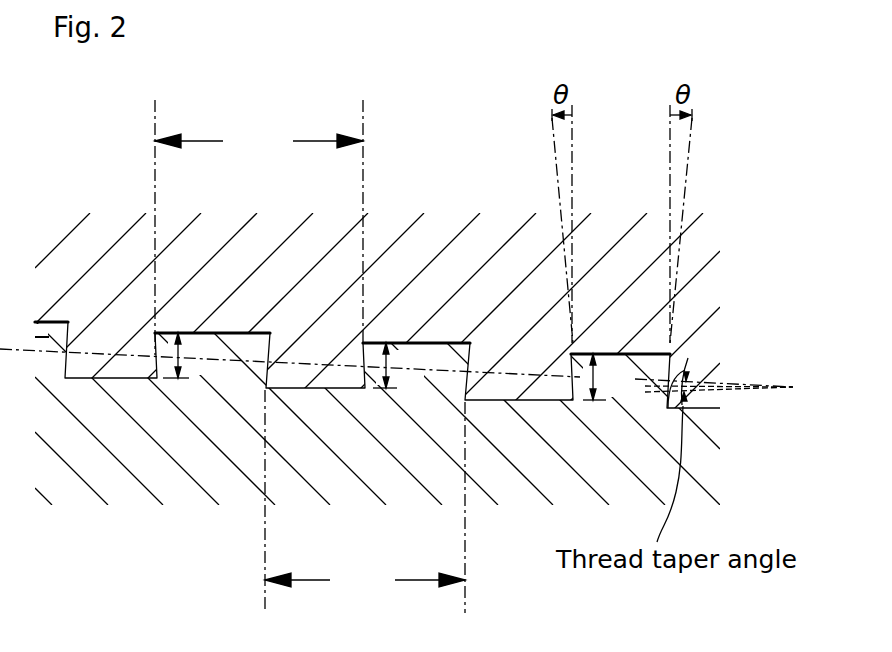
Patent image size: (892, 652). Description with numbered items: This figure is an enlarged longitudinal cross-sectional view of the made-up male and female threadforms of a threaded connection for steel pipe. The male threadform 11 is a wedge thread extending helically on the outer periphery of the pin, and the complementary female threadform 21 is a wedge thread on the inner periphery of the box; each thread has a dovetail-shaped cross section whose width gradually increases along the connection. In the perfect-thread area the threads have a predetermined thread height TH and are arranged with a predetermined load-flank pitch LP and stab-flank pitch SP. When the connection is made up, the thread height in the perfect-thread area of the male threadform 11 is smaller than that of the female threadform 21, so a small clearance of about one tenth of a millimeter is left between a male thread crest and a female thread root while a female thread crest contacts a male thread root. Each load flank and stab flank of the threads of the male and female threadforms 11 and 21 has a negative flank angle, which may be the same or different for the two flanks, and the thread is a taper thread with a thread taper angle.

The male threadform 11 is at (621, 358).
The female threadform 21 is at (505, 400).
The load-flank pitch LP is at (259, 142).
The stab-flank pitch SP is at (365, 582).
The thread height TH is at (396, 366).